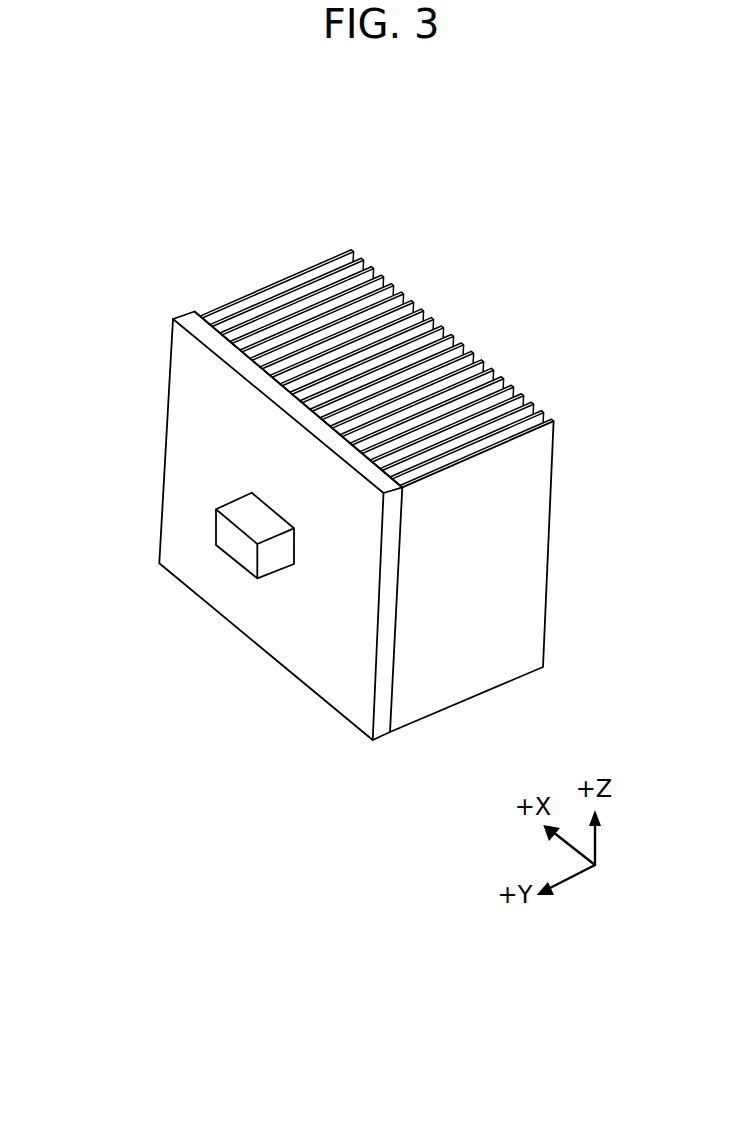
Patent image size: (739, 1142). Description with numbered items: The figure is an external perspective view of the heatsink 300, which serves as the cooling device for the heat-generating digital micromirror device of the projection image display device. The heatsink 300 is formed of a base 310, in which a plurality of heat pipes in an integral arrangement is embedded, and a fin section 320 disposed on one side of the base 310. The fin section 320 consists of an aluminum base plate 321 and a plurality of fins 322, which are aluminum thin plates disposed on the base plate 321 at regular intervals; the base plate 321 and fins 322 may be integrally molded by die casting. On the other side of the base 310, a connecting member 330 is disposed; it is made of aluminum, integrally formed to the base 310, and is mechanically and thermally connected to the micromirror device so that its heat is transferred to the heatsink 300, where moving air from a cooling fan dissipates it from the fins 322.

The heatsink 300 is at (478, 308).
The base 310 is at (205, 378).
The fin section 320 is at (128, 202).
The base plate 321 is at (195, 311).
The fins 322 is at (291, 276).
The connecting member 330 is at (253, 520).